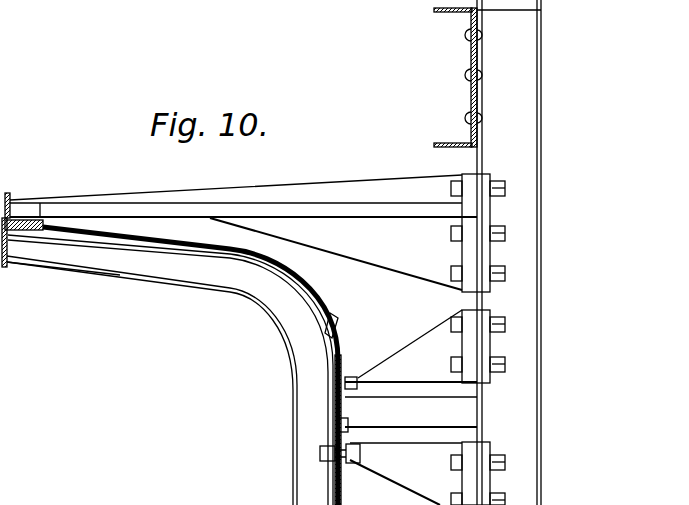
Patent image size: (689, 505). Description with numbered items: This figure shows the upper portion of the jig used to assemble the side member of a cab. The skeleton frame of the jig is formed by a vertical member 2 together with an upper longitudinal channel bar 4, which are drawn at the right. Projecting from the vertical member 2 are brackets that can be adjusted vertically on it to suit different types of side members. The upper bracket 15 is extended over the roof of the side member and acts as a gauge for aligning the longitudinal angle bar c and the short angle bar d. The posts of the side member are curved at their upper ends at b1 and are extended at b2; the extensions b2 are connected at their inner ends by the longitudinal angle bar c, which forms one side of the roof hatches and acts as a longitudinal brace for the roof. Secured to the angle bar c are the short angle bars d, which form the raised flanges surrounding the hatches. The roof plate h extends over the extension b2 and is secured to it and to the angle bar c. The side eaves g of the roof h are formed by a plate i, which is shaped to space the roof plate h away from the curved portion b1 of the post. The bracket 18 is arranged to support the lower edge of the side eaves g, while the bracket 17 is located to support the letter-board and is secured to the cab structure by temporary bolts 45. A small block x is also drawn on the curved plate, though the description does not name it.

The vertical member 2 is at (541, 346).
The upper longitudinal channel bar 4 is at (471, 101).
The upper bracket 15 is at (257, 233).
The bracket 18 is at (425, 353).
The bracket 17 is at (427, 473).
The temporary bolt 45 is at (320, 452).
The short angle bar d is at (10, 199).
The longitudinal angle bar c is at (8, 250).
The roof plate h is at (330, 297).
The curved upper end of post b1 is at (152, 380).
The post extension b2 is at (63, 281).
The plate i is at (337, 340).
The side eaves g is at (352, 377).
The block x is at (350, 413).